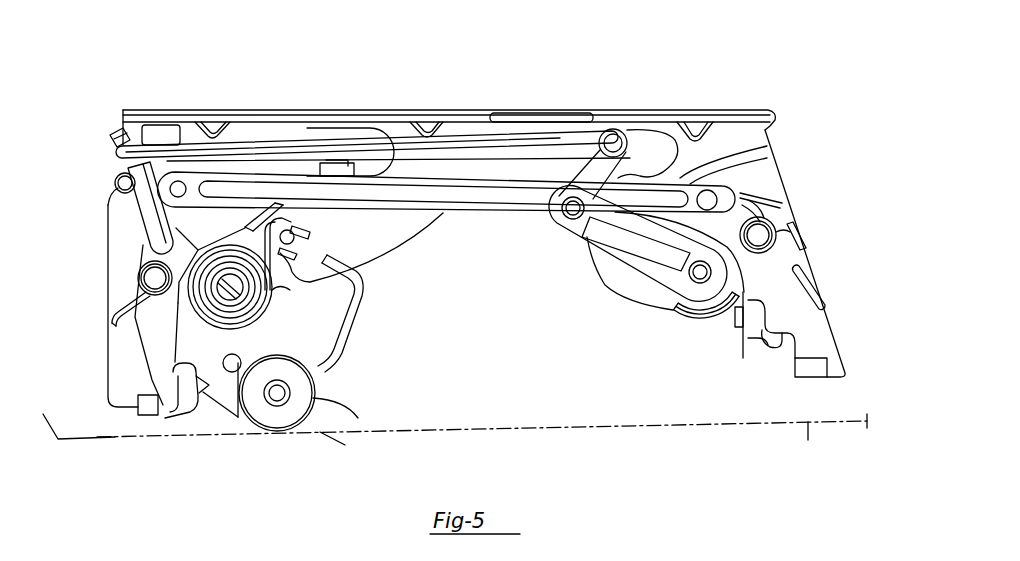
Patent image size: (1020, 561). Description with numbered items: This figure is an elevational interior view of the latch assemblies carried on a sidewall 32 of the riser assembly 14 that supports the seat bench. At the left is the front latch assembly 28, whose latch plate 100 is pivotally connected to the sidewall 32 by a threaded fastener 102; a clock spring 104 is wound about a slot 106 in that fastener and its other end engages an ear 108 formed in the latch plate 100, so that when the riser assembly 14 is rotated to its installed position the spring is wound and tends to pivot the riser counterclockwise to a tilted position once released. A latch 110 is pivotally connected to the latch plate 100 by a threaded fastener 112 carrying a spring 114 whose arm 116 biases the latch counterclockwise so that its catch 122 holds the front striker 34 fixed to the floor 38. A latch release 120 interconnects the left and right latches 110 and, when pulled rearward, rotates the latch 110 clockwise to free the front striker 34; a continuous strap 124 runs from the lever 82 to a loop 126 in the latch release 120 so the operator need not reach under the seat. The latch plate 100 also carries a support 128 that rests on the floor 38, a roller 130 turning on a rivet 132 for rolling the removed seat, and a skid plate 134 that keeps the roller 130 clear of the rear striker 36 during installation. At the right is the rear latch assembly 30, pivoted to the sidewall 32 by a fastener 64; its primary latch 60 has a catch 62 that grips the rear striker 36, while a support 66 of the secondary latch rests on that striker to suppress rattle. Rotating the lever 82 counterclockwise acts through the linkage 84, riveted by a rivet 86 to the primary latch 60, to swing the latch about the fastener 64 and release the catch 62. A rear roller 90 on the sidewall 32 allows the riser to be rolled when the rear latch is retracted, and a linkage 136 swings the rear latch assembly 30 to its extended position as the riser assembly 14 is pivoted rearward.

The riser assembly 14 is at (568, 103).
The front latch assembly 28 is at (252, 440).
The rear latch assembly 30 is at (670, 437).
The sidewall 32 is at (455, 150).
The front striker 34 is at (155, 407).
The rear striker 36 is at (795, 378).
The floor 38 is at (808, 424).
The primary latch 60 is at (867, 422).
The catch 62 is at (742, 360).
The fastener 64 is at (760, 235).
The support 66 is at (745, 340).
The lever 82 is at (613, 130).
The linkage 84 is at (593, 240).
The rivet 86 is at (712, 298).
The rear roller 90 is at (677, 307).
The latch plate 100 is at (300, 323).
The threaded fastener 102 is at (230, 287).
The clock spring 104 is at (300, 303).
The slot 106 is at (110, 315).
The ear 108 is at (287, 232).
The latch 110 is at (157, 350).
The threaded fastener 112 is at (133, 240).
The spring 114 is at (138, 278).
The arm 116 is at (132, 303).
The latch release 120 is at (140, 215).
The catch 122 is at (207, 410).
The strap 124 is at (385, 120).
The loop 126 is at (118, 130).
The support 128 is at (125, 412).
The roller 130 is at (313, 398).
The rivet 132 is at (280, 400).
The skid plate 134 is at (352, 322).
The linkage 136 is at (497, 177).